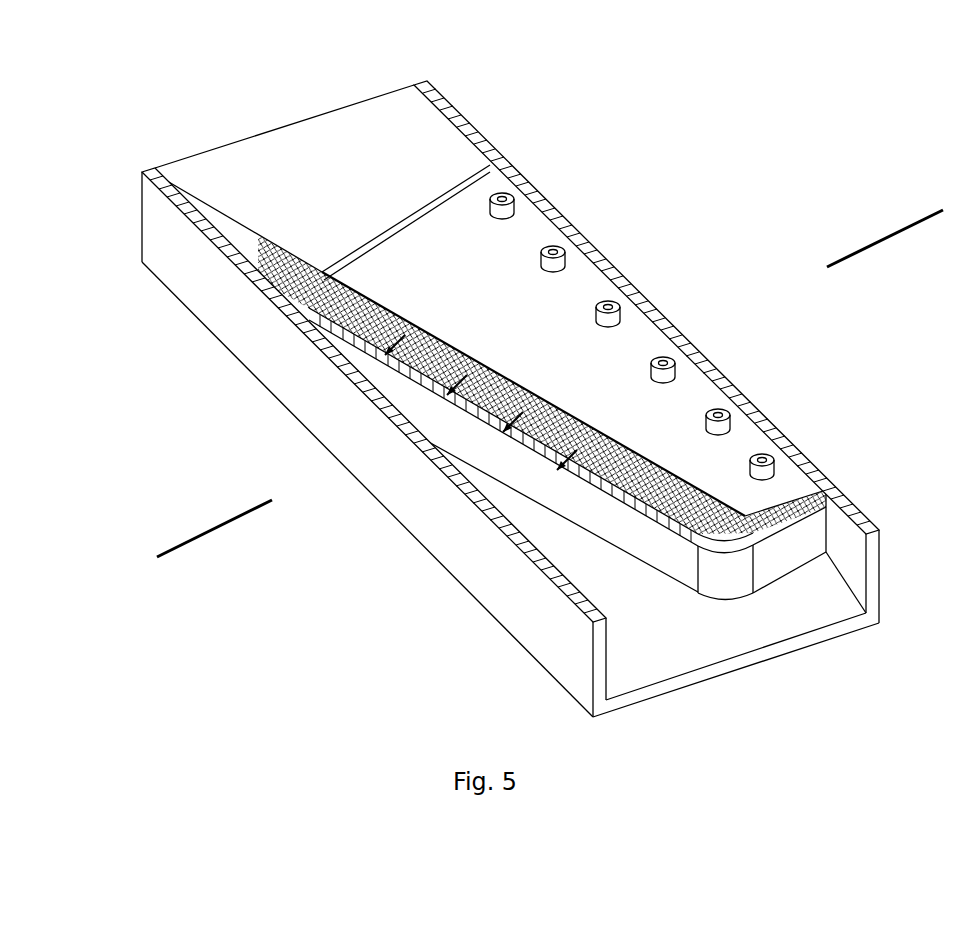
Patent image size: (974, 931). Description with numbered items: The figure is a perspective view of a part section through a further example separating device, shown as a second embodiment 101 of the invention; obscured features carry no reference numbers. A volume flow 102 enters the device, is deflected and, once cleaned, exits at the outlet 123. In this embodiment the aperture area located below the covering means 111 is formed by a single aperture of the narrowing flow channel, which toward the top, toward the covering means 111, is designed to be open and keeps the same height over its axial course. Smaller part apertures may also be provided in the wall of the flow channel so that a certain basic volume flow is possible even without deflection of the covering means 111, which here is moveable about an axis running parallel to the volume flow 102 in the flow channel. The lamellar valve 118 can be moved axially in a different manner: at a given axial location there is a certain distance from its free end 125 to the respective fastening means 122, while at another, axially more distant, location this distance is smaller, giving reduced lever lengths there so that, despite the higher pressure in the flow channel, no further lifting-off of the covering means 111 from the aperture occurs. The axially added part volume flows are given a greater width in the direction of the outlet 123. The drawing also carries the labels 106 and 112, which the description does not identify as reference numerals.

The second embodiment 101 is at (718, 252).
The volume flow 102 is at (257, 112).
The inclined panel 106 is at (338, 183).
The covering means 111 is at (530, 308).
The lamellar valve 118 is at (542, 384).
The flow channel 112 is at (496, 433).
The fastening means 122 is at (770, 462).
The outlet 123 is at (808, 609).
The free end 125 is at (330, 302).